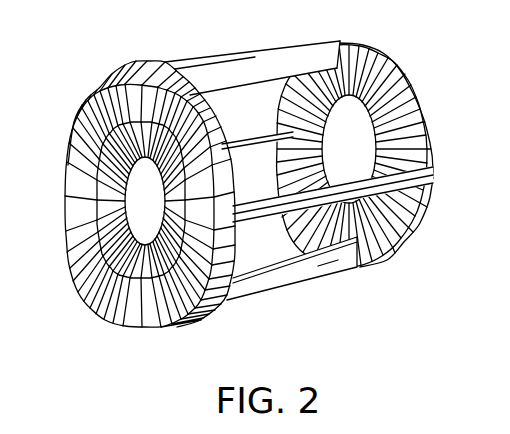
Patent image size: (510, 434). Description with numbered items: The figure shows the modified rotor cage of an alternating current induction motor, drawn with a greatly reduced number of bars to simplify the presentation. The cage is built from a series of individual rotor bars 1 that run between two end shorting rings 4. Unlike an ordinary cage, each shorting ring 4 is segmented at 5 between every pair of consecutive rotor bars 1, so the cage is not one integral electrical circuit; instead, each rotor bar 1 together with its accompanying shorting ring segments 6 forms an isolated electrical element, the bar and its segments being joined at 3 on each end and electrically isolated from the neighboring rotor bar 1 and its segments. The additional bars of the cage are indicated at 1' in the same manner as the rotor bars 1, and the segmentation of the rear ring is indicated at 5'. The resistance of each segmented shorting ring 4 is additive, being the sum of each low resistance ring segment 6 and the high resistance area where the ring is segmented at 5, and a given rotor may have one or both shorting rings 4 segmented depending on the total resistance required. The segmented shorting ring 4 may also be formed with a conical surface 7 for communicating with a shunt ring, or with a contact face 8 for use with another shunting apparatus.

The rotor bar 1 is at (252, 60).
The connecting bars 1' is at (327, 199).
The joint 3 is at (340, 44).
The shorting ring 4 is at (410, 237).
The segmentation 5 is at (134, 205).
The yoke of rear ring 5' is at (369, 156).
The shorting ring segment 6 is at (123, 212).
The conical surface 7 is at (93, 195).
The contact face 8 is at (122, 294).